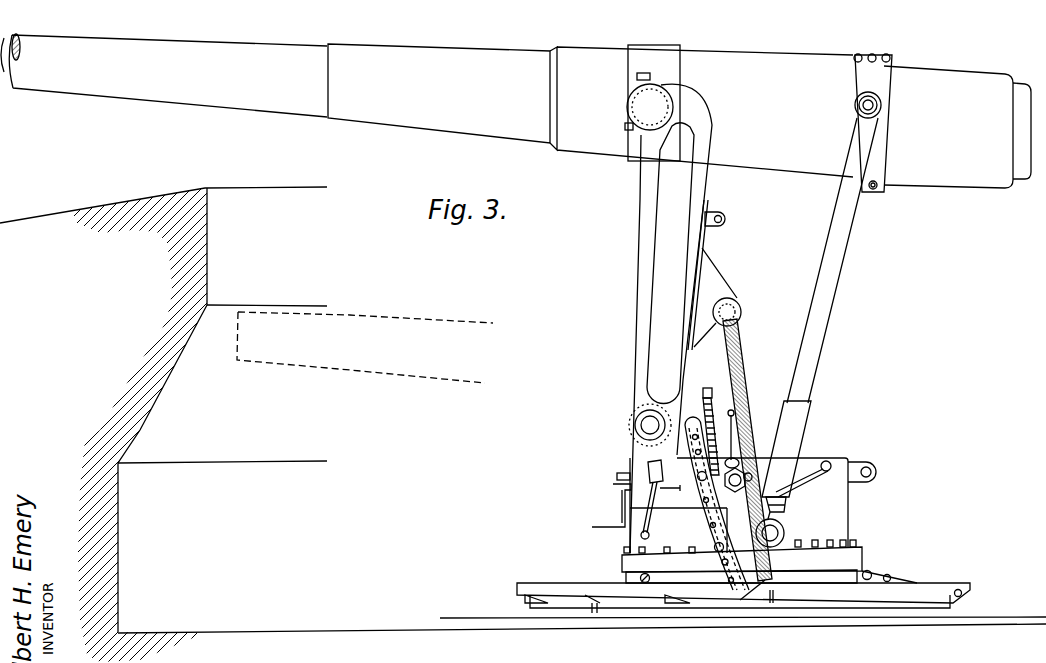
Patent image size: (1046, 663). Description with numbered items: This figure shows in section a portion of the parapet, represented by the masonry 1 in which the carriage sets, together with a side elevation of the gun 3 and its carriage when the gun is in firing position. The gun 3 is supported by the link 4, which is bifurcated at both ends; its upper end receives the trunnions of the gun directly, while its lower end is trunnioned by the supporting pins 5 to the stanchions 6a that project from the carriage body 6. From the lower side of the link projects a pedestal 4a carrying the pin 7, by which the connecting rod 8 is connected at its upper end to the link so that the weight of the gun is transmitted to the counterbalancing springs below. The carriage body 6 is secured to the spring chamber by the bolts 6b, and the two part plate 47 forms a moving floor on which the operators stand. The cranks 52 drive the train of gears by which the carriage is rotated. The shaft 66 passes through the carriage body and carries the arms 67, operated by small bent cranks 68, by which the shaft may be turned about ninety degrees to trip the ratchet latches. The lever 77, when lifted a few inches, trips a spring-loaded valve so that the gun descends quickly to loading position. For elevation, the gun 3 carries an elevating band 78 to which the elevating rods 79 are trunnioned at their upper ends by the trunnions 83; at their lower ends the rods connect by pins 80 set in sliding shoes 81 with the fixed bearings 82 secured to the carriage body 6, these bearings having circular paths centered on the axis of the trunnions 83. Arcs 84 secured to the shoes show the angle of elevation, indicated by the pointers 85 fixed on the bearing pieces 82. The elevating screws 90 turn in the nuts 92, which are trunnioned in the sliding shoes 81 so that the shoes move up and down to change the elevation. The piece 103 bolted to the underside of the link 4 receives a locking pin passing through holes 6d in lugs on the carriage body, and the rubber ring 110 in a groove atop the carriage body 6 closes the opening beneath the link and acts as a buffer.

The masonry 1 is at (483, 622).
The gun 3 is at (516, 111).
The link 4 is at (668, 313).
The pedestal 4a is at (722, 281).
The supporting pins 5 is at (634, 425).
The carriage body 6 is at (762, 502).
The stanchions 6a is at (628, 459).
The bolts 6b is at (856, 541).
The holes 6d is at (872, 472).
The pin 7 is at (741, 312).
The connecting rod 8 is at (740, 364).
The two part plate 47 is at (925, 583).
The cranks 52 is at (598, 509).
The shaft 66 is at (649, 537).
The arms 67 is at (654, 520).
The bent cranks 68 is at (666, 484).
The lever 77 is at (634, 515).
The elevating band 78 is at (885, 163).
The elevating rods 79 is at (818, 362).
The pins 80 is at (776, 515).
The sliding shoes 81 is at (778, 530).
The fixed bearings 82 is at (708, 521).
The trunnions 83 is at (881, 104).
The arcs 84 is at (706, 398).
The pointers 85 is at (704, 426).
The elevating screws 90 is at (747, 451).
The nuts 92 is at (752, 562).
The piece 103 is at (727, 218).
The rubber ring 110 is at (832, 457).